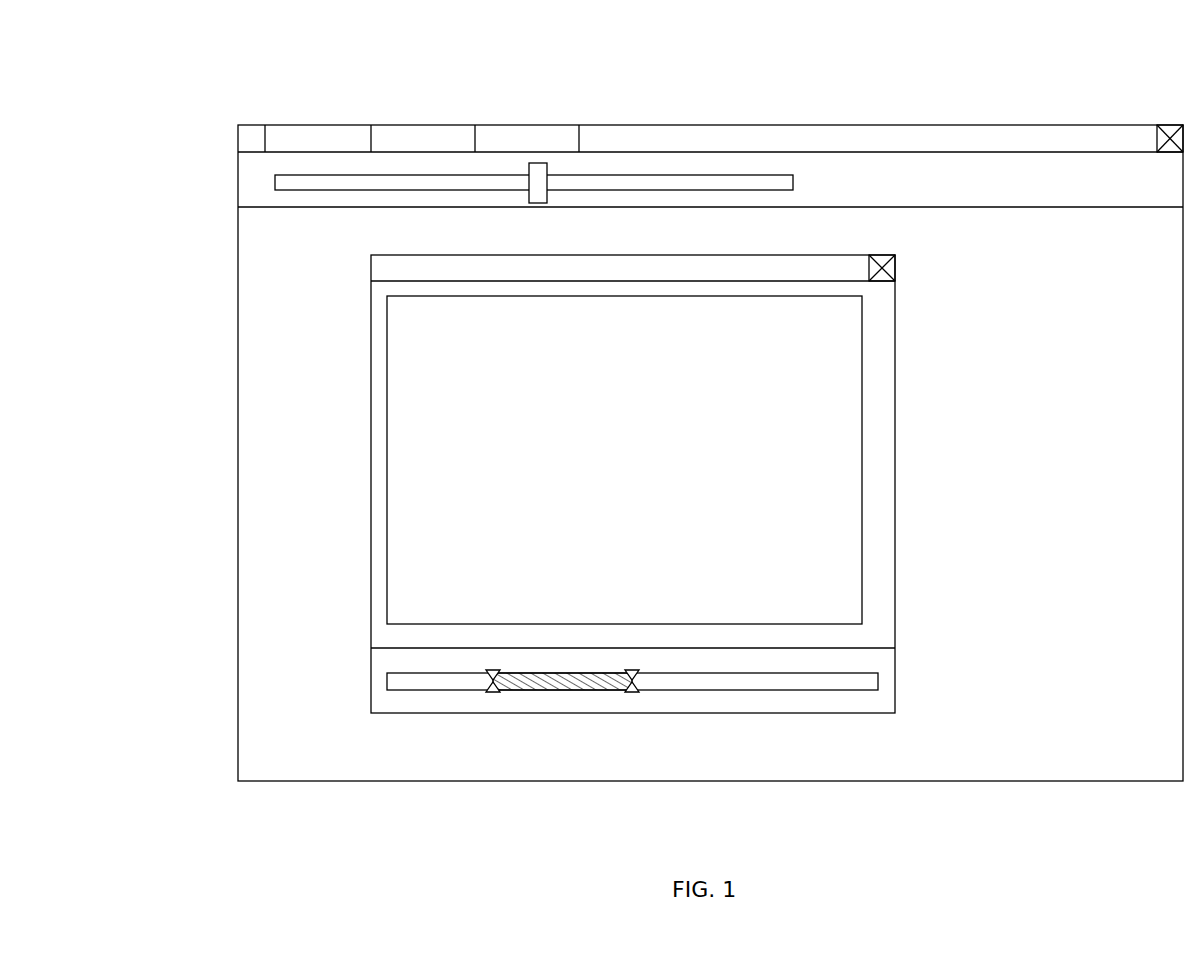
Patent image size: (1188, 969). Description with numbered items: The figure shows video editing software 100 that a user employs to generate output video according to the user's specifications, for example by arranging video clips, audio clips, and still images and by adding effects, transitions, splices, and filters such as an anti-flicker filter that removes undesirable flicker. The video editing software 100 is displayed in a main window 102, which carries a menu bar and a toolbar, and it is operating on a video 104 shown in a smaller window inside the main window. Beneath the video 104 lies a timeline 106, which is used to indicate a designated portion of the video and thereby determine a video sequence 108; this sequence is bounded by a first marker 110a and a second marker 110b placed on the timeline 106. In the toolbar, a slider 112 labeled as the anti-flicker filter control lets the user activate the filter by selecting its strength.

The video editing software 100 is at (250, 58).
The main window 102 is at (634, 126).
The video 104 is at (895, 508).
The timeline 106 is at (835, 690).
The video sequence 108 is at (552, 690).
The marker 110a is at (493, 692).
The marker 110b is at (632, 692).
The slider 112 is at (540, 163).